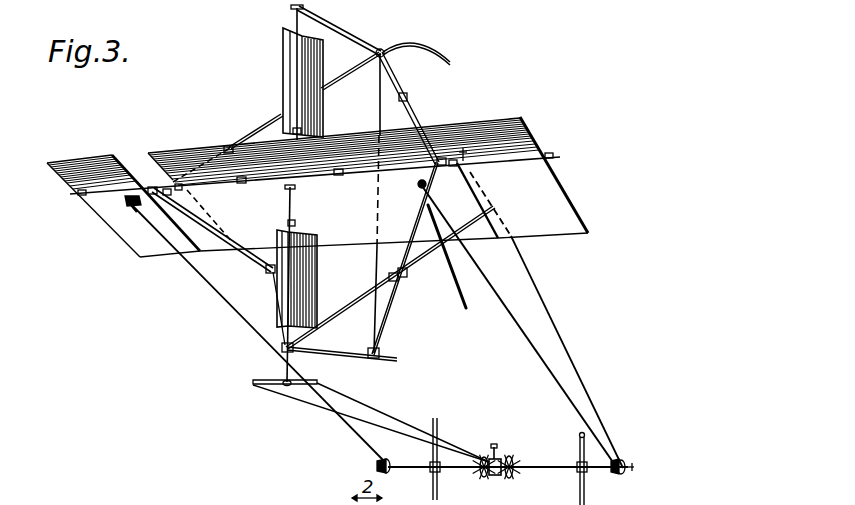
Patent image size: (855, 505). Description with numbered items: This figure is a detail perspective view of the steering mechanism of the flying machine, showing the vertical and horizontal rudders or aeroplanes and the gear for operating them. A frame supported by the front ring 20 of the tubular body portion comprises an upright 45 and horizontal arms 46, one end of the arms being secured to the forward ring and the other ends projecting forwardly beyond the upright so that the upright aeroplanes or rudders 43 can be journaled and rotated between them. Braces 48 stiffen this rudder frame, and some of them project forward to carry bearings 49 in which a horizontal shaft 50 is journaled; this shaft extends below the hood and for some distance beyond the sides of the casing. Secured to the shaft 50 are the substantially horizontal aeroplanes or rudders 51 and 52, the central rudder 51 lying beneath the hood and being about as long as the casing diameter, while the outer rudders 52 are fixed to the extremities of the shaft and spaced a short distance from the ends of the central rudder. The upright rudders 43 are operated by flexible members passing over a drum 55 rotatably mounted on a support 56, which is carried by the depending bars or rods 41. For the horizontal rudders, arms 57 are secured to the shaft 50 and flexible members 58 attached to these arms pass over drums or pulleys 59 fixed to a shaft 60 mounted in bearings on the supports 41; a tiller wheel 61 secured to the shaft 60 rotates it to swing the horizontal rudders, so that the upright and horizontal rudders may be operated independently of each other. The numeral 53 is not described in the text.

The spaced rings 20 is at (446, 58).
The depending bars or rods 41 is at (439, 420).
The upright aeroplanes or rudders 43 is at (283, 48).
The upright 45 is at (374, 121).
The horizontal arms 46 is at (360, 42).
The braces 48 is at (356, 72).
The bearings 49 is at (172, 185).
The horizontal shaft 50 is at (352, 181).
The horizontal aeroplane or rudder 51 is at (228, 150).
The horizontal aeroplanes or rudders 52 is at (137, 237).
The base plate 53 is at (298, 386).
The drum 55 is at (512, 455).
The support 56 is at (547, 484).
The arms 57 is at (137, 213).
The flexible members 58 is at (230, 302).
The drums or pulleys 59 is at (380, 463).
The shaft 60 is at (468, 471).
The tiller wheel 61 is at (490, 450).